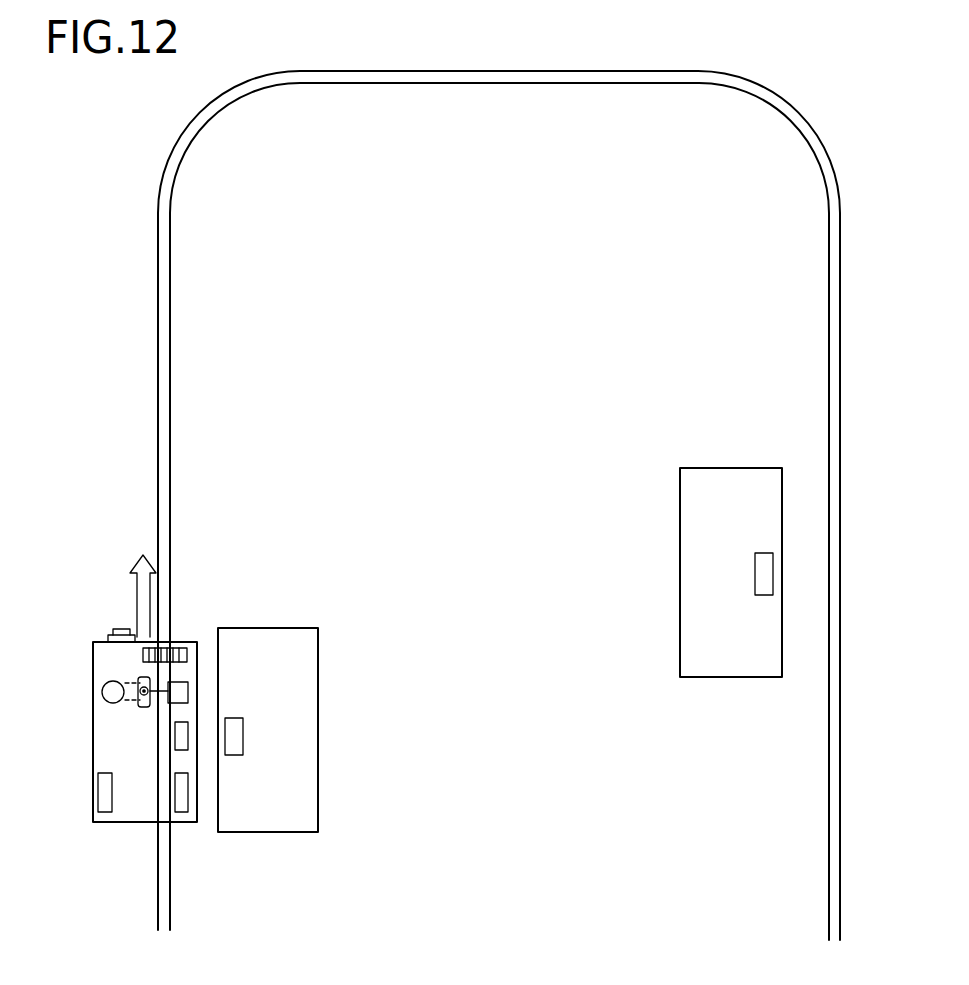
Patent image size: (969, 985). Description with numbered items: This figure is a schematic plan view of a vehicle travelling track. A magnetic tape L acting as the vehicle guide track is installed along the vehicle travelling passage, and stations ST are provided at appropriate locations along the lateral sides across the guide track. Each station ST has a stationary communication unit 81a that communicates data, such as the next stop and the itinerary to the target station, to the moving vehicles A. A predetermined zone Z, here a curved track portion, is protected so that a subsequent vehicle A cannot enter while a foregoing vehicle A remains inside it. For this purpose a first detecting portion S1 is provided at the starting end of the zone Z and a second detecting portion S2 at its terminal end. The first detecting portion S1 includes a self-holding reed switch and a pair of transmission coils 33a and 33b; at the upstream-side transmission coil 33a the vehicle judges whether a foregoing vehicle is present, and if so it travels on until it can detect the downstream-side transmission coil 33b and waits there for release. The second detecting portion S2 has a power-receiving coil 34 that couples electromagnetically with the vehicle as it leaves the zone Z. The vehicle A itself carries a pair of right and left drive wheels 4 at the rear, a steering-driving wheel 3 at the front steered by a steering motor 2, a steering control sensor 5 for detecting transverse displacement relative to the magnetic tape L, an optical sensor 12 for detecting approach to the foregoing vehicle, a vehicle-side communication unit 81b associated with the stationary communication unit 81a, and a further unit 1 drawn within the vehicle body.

The magnetic tape L is at (482, 72).
The predetermined zone Z is at (364, 17).
The power-receiving coil 34 is at (363, 132).
The second detecting portion S2 is at (368, 218).
The upstream-side transmission coil 33a is at (598, 132).
The downstream-side transmission coil 33b is at (655, 182).
The first detecting portion S1 is at (680, 220).
The station ST is at (318, 655).
The stationary communication unit 81a is at (243, 750).
The vehicle-side communication unit 81b is at (188, 728).
The vehicle A is at (93, 742).
The optical sensor 12 is at (122, 628).
The steering control sensor 5 is at (178, 648).
The steering motor 2 is at (103, 690).
The steering-driving wheel 3 is at (145, 708).
The guide unit 1 is at (190, 690).
The drive wheels 4 is at (108, 812).